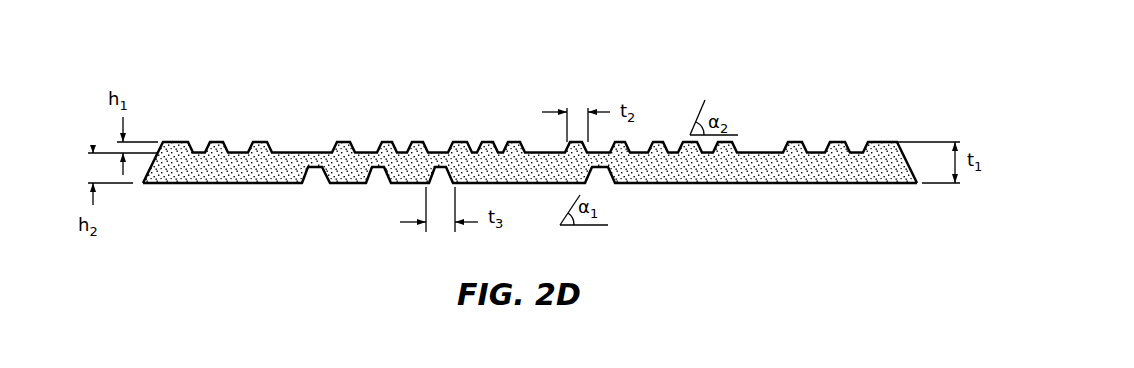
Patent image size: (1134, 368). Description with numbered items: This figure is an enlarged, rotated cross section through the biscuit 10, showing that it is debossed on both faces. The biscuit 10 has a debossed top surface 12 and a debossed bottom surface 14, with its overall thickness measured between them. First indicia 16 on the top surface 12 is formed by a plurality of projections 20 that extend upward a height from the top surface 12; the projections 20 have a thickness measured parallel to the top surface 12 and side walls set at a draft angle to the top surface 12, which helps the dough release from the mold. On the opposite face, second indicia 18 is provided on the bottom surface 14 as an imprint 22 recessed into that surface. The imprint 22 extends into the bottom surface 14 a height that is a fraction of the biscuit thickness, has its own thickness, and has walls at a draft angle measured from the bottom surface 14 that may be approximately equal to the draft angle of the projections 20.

The biscuit 10 is at (796, 46).
The top surface 12 is at (763, 153).
The bottom surface 14 is at (797, 185).
The first indicia 16 is at (463, 142).
The second indicia 18 is at (311, 171).
The projections 20 is at (177, 142).
The imprint 22 is at (322, 175).